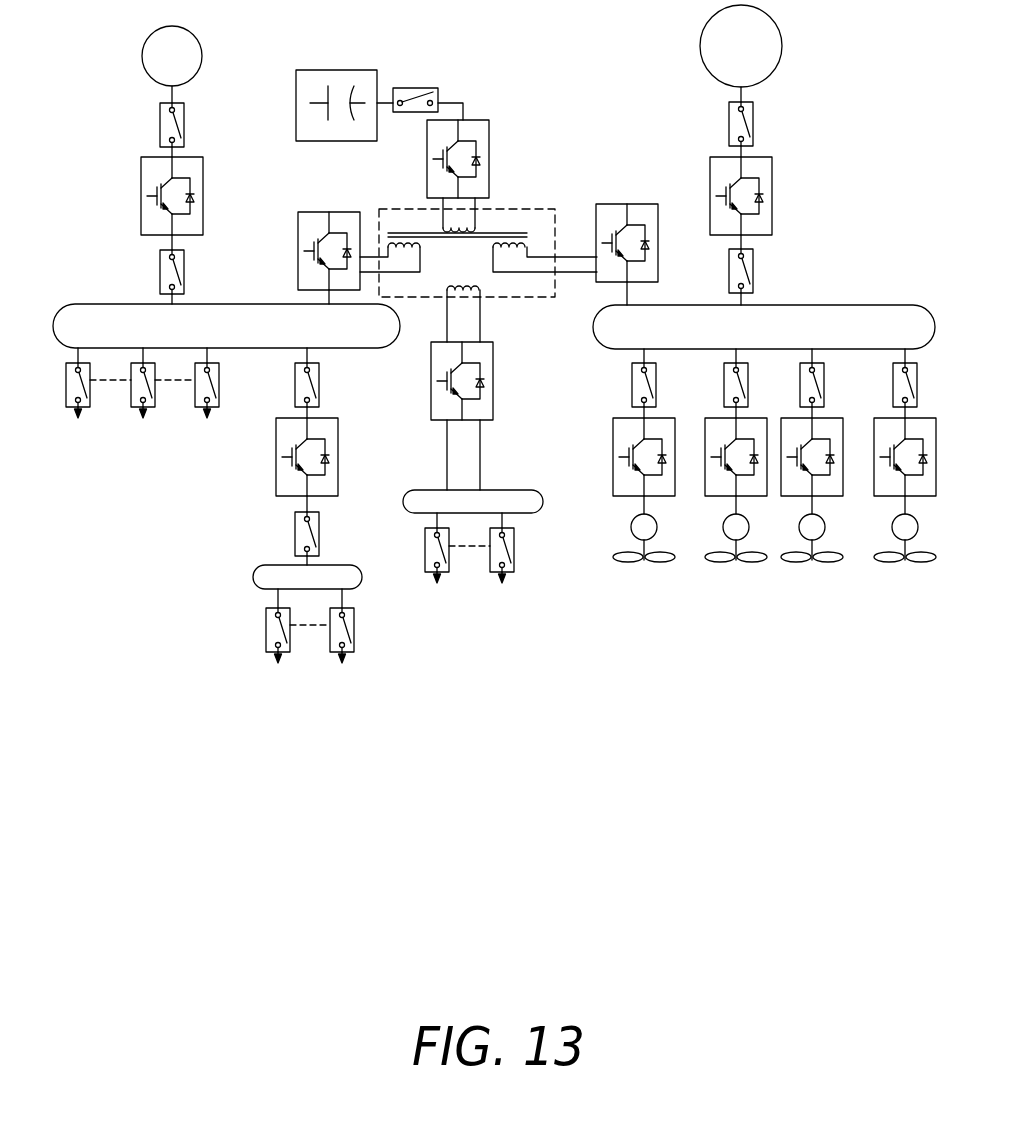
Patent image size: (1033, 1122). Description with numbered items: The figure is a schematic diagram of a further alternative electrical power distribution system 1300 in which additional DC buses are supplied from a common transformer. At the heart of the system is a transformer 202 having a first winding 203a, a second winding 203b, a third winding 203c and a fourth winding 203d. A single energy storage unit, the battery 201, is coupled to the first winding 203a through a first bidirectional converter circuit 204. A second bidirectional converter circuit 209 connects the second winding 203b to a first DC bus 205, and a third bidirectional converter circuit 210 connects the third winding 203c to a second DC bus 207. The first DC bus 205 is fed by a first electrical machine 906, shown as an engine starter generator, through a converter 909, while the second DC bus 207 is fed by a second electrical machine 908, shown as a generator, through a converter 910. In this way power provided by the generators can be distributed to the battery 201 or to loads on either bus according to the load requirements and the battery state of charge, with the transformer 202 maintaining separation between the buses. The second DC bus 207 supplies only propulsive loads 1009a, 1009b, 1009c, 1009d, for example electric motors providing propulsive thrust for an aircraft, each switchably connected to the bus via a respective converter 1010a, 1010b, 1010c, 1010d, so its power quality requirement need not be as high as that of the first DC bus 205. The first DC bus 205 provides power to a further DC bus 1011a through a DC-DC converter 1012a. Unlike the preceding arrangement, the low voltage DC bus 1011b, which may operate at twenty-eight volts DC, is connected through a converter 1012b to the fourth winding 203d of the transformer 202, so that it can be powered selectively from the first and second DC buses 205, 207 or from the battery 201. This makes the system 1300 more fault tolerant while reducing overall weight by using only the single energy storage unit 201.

The first electrical machine 906 is at (141, 56).
The converter 909 is at (141, 196).
The battery 201 is at (296, 88).
The transformer 202 is at (432, 226).
The second bidirectional converter circuit 209 is at (298, 232).
The first bidirectional converter circuit 204 is at (475, 120).
The first winding 203a is at (490, 229).
The second winding 203b is at (406, 242).
The third winding 203c is at (522, 242).
The fourth winding 203d is at (481, 283).
The third bidirectional converter circuit 210 is at (647, 204).
The second electrical machine 908 is at (700, 44).
The converter 910 is at (772, 205).
The electrical power distribution system 1300 is at (838, 92).
The first DC bus 205 is at (370, 348).
The second DC bus 207 is at (594, 338).
The DC-DC converter 1012a is at (277, 470).
The converter 1012b is at (493, 377).
The further DC bus 1011a is at (253, 575).
The low voltage DC bus 1011b is at (410, 512).
The converter 1010a is at (613, 447).
The converter 1010b is at (705, 494).
The converter 1010c is at (782, 494).
The converter 1010d is at (873, 494).
The propulsive load 1009a is at (631, 528).
The propulsive load 1009b is at (723, 531).
The propulsive load 1009c is at (799, 531).
The propulsive load 1009d is at (892, 531).